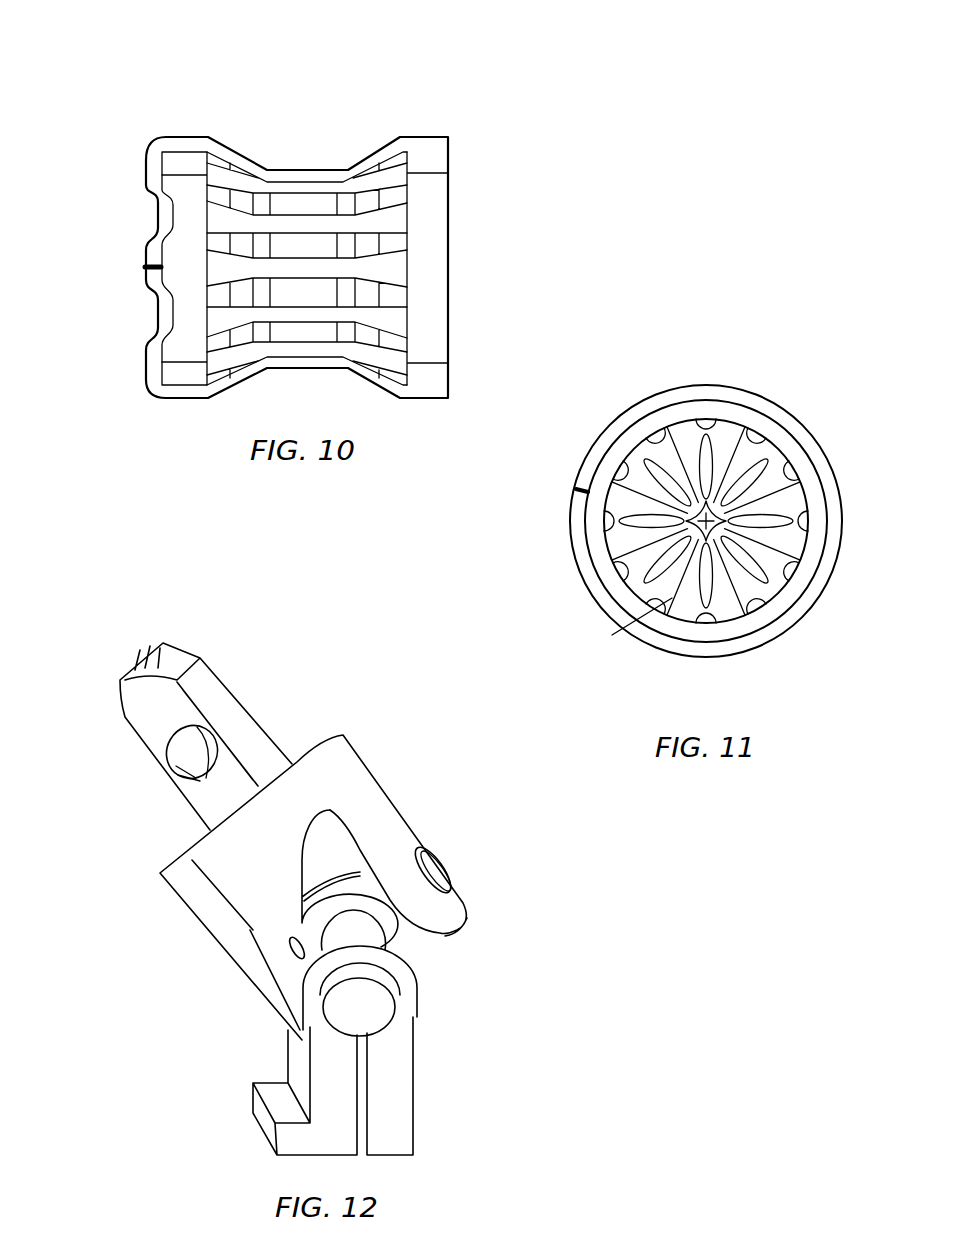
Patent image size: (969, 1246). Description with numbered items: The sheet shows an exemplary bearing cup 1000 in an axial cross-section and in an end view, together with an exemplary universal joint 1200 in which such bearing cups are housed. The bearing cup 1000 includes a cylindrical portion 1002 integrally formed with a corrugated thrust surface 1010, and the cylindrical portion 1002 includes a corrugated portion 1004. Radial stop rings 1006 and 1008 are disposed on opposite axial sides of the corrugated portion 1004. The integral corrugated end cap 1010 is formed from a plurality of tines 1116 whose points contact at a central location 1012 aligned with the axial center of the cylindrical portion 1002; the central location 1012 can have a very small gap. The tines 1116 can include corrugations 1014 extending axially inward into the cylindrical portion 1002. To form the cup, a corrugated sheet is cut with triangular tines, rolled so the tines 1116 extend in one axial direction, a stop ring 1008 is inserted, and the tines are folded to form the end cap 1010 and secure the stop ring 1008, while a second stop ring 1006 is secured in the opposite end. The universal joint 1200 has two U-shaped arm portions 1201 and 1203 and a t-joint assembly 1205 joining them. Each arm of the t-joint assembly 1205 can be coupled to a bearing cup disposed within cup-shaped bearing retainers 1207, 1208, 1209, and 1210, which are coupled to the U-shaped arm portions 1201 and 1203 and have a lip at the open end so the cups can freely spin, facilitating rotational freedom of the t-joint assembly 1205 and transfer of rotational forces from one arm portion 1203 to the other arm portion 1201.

In FIG. 10, the bearing cup 1000 is at (249, 77).
In FIG. 10, the cylindrical portion 1002 is at (402, 137).
In FIG. 11, the cylindrical portion 1002 is at (577, 518).
In FIG. 10, the corrugated portion 1004 is at (293, 367).
In FIG. 10, the radial stop ring 1006 is at (407, 163).
In FIG. 11, the radial stop ring 1006 is at (660, 418).
In FIG. 10, the radial stop ring 1008 is at (170, 165).
In FIG. 10, the corrugated thrust surface 1010 is at (157, 355).
In FIG. 10, the central location 1012 is at (146, 267).
In FIG. 10, the corrugations 1014 is at (163, 223).
In FIG. 11, the tines 1116 is at (722, 433).
In FIG. 12, the universal joint 1200 is at (321, 666).
In FIG. 12, the U-shaped arm portion 1201 is at (392, 1143).
In FIG. 12, the U-shaped arm portion 1203 is at (342, 750).
In FIG. 12, the t-joint assembly 1205 is at (373, 938).
In FIG. 12, the bearing retainer 1207 is at (373, 1013).
In FIG. 12, the bearing retainer 1208 is at (330, 848).
In FIG. 12, the bearing retainer 1209 is at (428, 862).
In FIG. 12, the bearing retainer 1210 is at (300, 957).